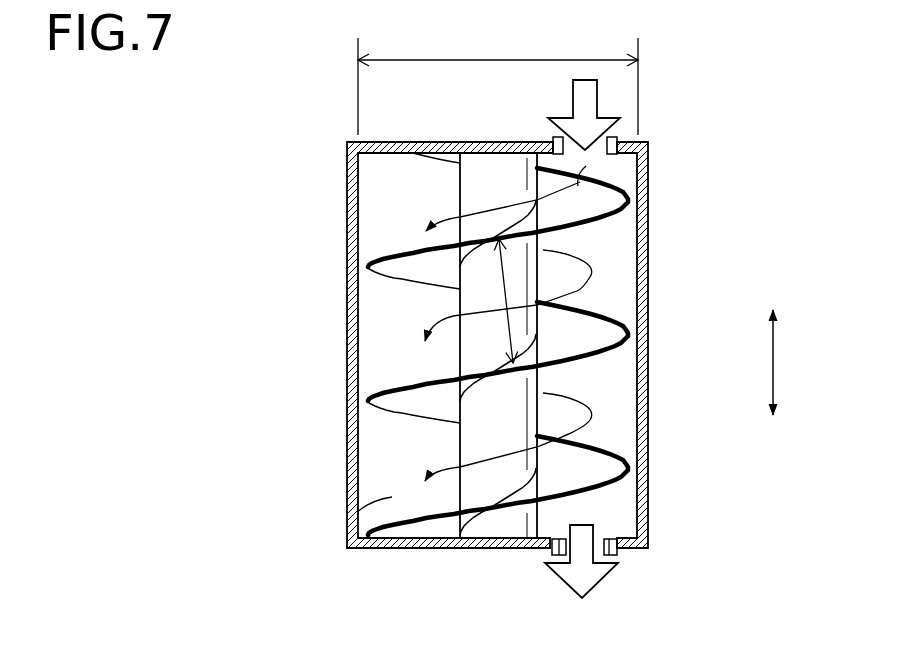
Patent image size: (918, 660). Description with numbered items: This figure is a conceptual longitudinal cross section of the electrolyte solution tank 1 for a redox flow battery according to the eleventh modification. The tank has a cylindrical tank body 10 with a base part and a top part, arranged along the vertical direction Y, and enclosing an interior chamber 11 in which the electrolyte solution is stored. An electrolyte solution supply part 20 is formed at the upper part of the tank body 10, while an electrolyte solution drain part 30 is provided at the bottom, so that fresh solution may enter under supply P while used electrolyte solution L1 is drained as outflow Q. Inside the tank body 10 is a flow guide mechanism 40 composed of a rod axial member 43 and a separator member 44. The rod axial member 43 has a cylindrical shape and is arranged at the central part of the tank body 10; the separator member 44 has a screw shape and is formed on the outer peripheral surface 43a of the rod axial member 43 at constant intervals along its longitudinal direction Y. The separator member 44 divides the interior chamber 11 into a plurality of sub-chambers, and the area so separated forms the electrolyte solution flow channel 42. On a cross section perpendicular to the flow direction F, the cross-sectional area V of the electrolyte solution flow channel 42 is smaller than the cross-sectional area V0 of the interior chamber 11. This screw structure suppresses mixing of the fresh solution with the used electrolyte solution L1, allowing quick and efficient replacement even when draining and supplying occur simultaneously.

The electrolyte solution tank 1 is at (333, 75).
The tank body 10 is at (347, 165).
The interior chamber 11 is at (363, 222).
The electrolyte solution supply part 20 is at (628, 140).
The electrolyte solution drain part 30 is at (547, 548).
The flow guide mechanism 40 is at (258, 335).
The electrolyte solution flow channel 42 is at (388, 456).
The rod axial member 43 is at (477, 303).
The outer peripheral surface 43a is at (540, 380).
The separator member 44 is at (422, 384).
The inflow P is at (583, 105).
The outflow Q is at (578, 578).
The flow direction F is at (577, 291).
The cross-sectional area of the electrolyte solution flow channel V is at (505, 287).
The cross-sectional area of the interior chamber V0 is at (498, 81).
The electrolyte solution L1 is at (352, 524).
The vertical direction Y is at (782, 367).